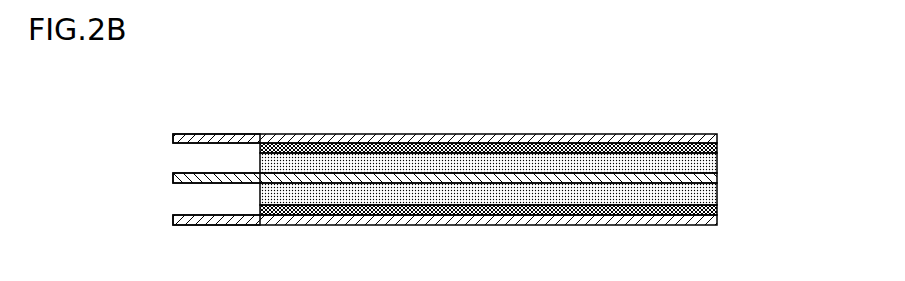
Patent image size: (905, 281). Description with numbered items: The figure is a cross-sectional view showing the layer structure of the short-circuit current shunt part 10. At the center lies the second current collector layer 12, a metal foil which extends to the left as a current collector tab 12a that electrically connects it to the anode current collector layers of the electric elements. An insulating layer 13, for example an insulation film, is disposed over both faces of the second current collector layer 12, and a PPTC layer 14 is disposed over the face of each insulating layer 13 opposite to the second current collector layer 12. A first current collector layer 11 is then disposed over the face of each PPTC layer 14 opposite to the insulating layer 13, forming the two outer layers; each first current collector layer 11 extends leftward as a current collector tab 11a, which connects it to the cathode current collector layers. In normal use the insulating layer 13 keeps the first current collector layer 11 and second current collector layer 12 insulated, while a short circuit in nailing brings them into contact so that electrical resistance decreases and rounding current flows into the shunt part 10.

The short-circuit current shunt part 10 is at (470, 95).
The first current collector layer 11 is at (717, 138).
The current collector tab 11a is at (168, 139).
The second current collector layer 12 is at (717, 177).
The current collector tab 12a is at (168, 180).
The insulating layer 13 is at (717, 164).
The PPTC layer 14 is at (717, 148).